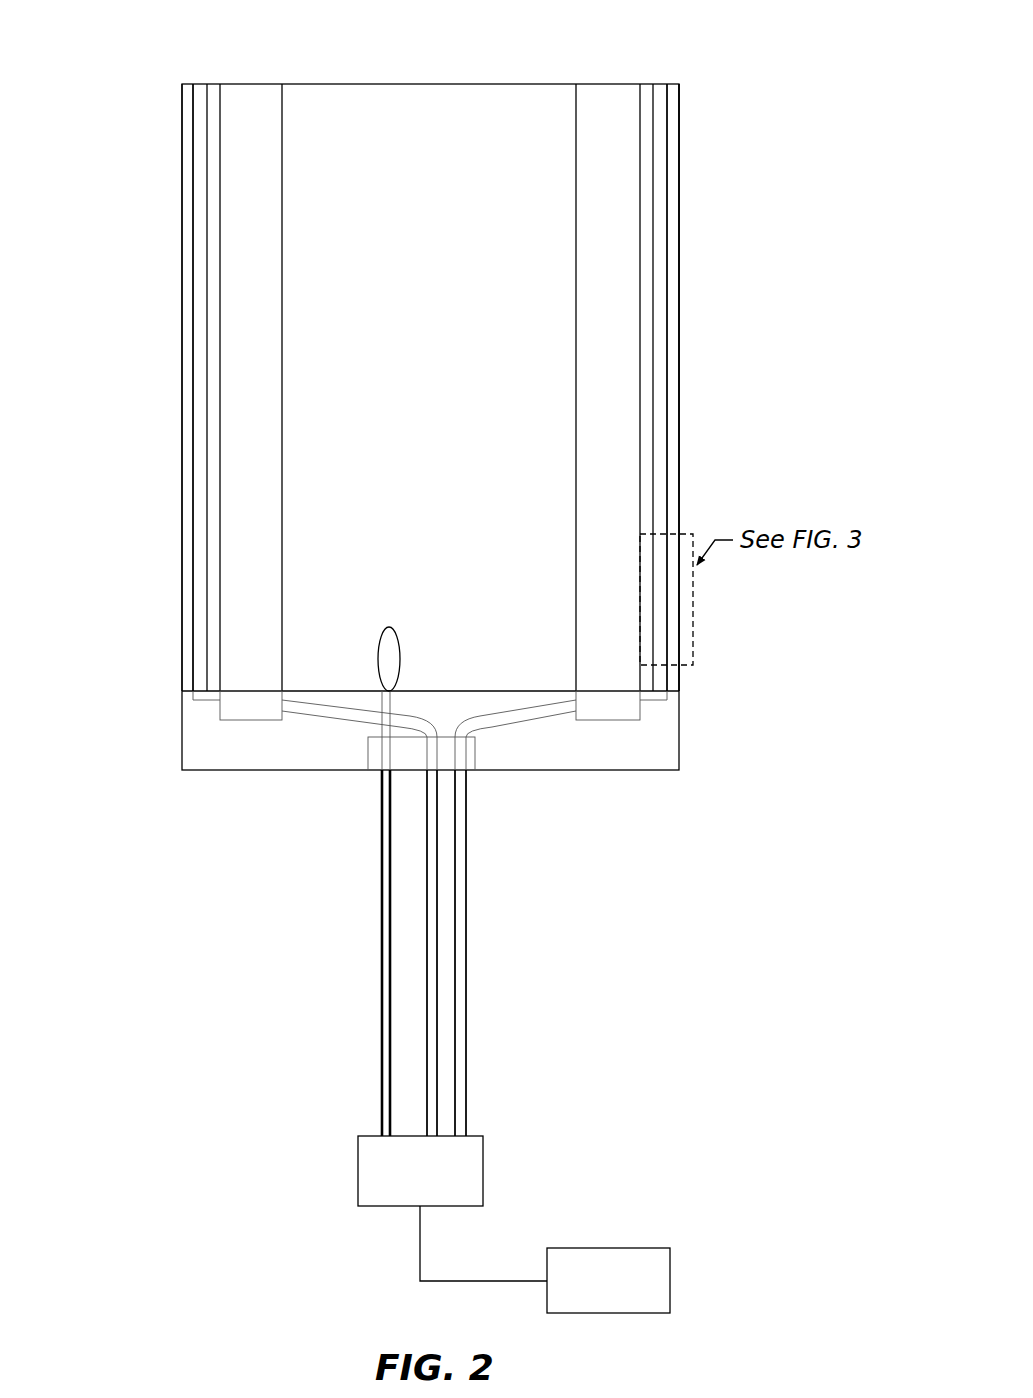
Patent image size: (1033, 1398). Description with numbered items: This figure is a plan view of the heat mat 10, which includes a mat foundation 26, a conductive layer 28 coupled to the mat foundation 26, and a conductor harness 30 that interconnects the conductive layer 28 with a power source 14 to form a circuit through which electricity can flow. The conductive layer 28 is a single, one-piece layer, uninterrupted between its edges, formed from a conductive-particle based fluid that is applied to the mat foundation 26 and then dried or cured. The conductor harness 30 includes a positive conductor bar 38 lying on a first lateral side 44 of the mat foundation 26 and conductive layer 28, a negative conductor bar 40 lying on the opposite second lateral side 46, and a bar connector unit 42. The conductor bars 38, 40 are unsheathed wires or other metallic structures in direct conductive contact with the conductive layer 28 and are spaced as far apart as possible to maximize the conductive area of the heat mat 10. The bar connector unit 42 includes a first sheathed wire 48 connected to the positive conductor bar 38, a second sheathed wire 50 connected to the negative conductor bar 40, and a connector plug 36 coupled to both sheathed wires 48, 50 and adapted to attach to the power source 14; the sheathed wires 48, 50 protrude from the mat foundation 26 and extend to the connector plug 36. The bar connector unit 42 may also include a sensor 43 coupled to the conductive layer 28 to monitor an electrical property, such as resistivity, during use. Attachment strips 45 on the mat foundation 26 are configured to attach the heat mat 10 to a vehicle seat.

The heat mat 10 is at (705, 46).
The power source 14 is at (670, 1282).
The mat foundation 26 is at (684, 335).
The conductive layer 28 is at (550, 264).
The conductor harness 30 is at (490, 916).
The connector plug 36 is at (483, 1170).
The positive conductor bar 38 is at (202, 596).
The negative conductor bar 40 is at (660, 421).
The bar connector unit 42 is at (358, 916).
The sensor 43 is at (373, 660).
The first lateral side 44 is at (166, 428).
The attachment strips 45 is at (250, 97).
The second lateral side 46 is at (703, 348).
The first sheathed wire 48 is at (433, 848).
The second sheathed wire 50 is at (460, 858).